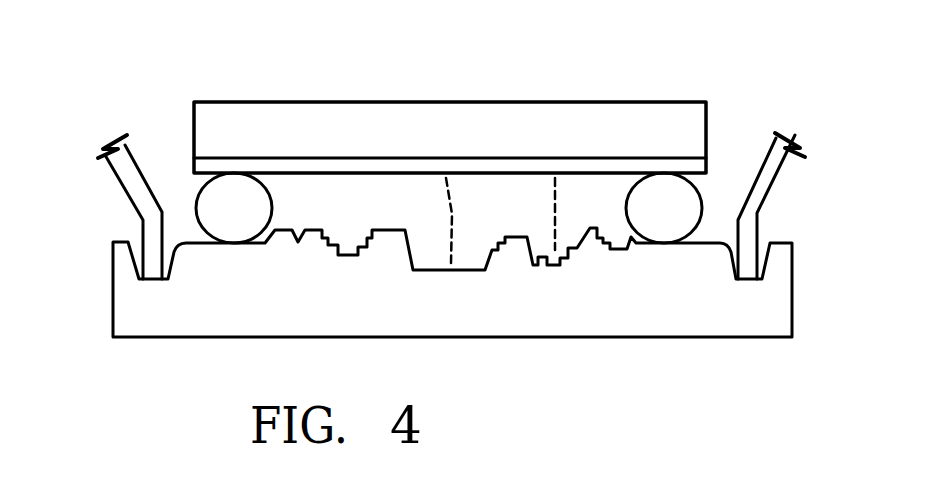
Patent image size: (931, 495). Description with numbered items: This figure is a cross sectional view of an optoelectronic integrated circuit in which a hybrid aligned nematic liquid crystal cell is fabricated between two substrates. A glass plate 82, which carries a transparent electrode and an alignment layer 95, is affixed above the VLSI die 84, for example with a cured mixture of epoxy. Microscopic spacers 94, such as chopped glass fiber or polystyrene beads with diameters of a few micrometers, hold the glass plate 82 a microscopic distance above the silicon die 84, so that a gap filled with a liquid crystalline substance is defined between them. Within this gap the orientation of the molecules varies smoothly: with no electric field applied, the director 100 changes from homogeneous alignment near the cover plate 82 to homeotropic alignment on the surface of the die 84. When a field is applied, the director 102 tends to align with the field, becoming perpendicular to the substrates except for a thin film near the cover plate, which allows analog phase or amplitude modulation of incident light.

The glass plate 82 is at (658, 113).
The alignment layer 95 is at (203, 165).
The microscopic spacers 94 is at (693, 205).
The VLSI die 84 is at (772, 318).
The director 100 is at (460, 215).
The director 102 is at (562, 215).